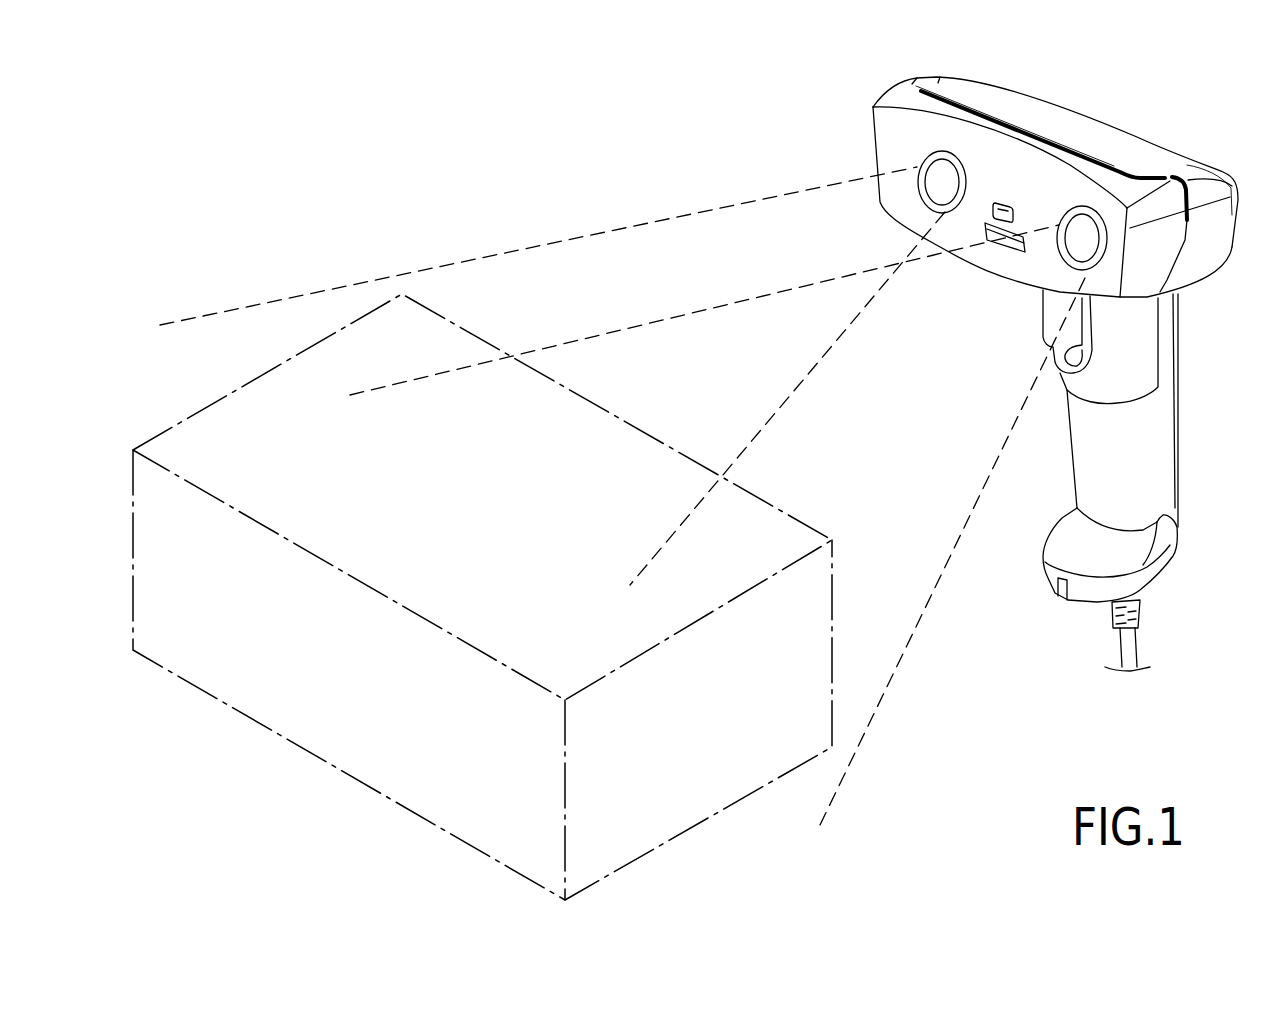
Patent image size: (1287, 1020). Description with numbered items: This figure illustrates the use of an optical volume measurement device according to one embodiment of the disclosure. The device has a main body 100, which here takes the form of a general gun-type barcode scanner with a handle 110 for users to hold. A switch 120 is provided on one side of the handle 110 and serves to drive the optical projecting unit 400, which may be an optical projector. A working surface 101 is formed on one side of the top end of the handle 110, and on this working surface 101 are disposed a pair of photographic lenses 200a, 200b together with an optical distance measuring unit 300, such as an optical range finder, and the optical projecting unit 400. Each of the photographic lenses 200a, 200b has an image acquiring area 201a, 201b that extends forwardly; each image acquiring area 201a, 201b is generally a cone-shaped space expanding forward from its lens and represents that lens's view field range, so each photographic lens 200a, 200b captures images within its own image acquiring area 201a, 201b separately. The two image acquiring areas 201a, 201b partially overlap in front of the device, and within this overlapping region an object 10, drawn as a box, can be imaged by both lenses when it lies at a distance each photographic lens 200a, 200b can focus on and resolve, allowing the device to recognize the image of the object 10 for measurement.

The object 10 is at (300, 655).
The main body 100 is at (1041, 357).
The working surface 101 is at (880, 138).
The handle 110 is at (1142, 447).
The switch 120 is at (1047, 320).
The photographic lens 200a is at (1082, 238).
The photographic lens 200b is at (947, 182).
The image acquiring area 201a is at (914, 542).
The image acquiring area 201b is at (639, 250).
The optical distance measuring unit 300 is at (1012, 243).
The optical projecting unit 400 is at (993, 213).